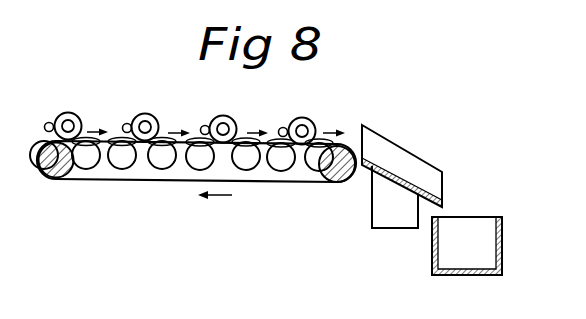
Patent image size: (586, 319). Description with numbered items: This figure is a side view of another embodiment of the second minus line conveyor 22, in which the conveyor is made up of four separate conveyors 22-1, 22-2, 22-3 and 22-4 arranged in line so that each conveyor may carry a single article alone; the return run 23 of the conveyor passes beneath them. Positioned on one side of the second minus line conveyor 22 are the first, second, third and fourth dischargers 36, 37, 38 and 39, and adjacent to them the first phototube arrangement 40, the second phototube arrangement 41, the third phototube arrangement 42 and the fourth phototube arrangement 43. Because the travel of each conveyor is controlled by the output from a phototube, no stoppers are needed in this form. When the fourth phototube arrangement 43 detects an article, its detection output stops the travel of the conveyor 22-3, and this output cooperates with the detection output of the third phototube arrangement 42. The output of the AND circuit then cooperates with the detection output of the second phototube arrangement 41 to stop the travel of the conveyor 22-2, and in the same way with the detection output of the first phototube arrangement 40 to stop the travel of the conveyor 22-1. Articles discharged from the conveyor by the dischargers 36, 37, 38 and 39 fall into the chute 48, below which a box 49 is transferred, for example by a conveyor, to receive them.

The second minus line conveyor 22 is at (183, 176).
The conveyor 22-1 is at (80, 181).
The conveyor 22-2 is at (158, 181).
The conveyor 22-3 is at (240, 175).
The fourth conveyor section 22-4 is at (315, 176).
The return run of conveyor 23 is at (295, 183).
The first discharger 36 is at (77, 115).
The second discharger 37 is at (156, 118).
The third discharger 38 is at (236, 123).
The fourth discharger 39 is at (313, 125).
The first phototube arrangement 40 is at (47, 122).
The second phototube arrangement 41 is at (127, 123).
The third phototube arrangement 42 is at (205, 125).
The fourth phototube arrangement 43 is at (284, 127).
The chute 48 is at (415, 152).
The box 49 is at (480, 217).